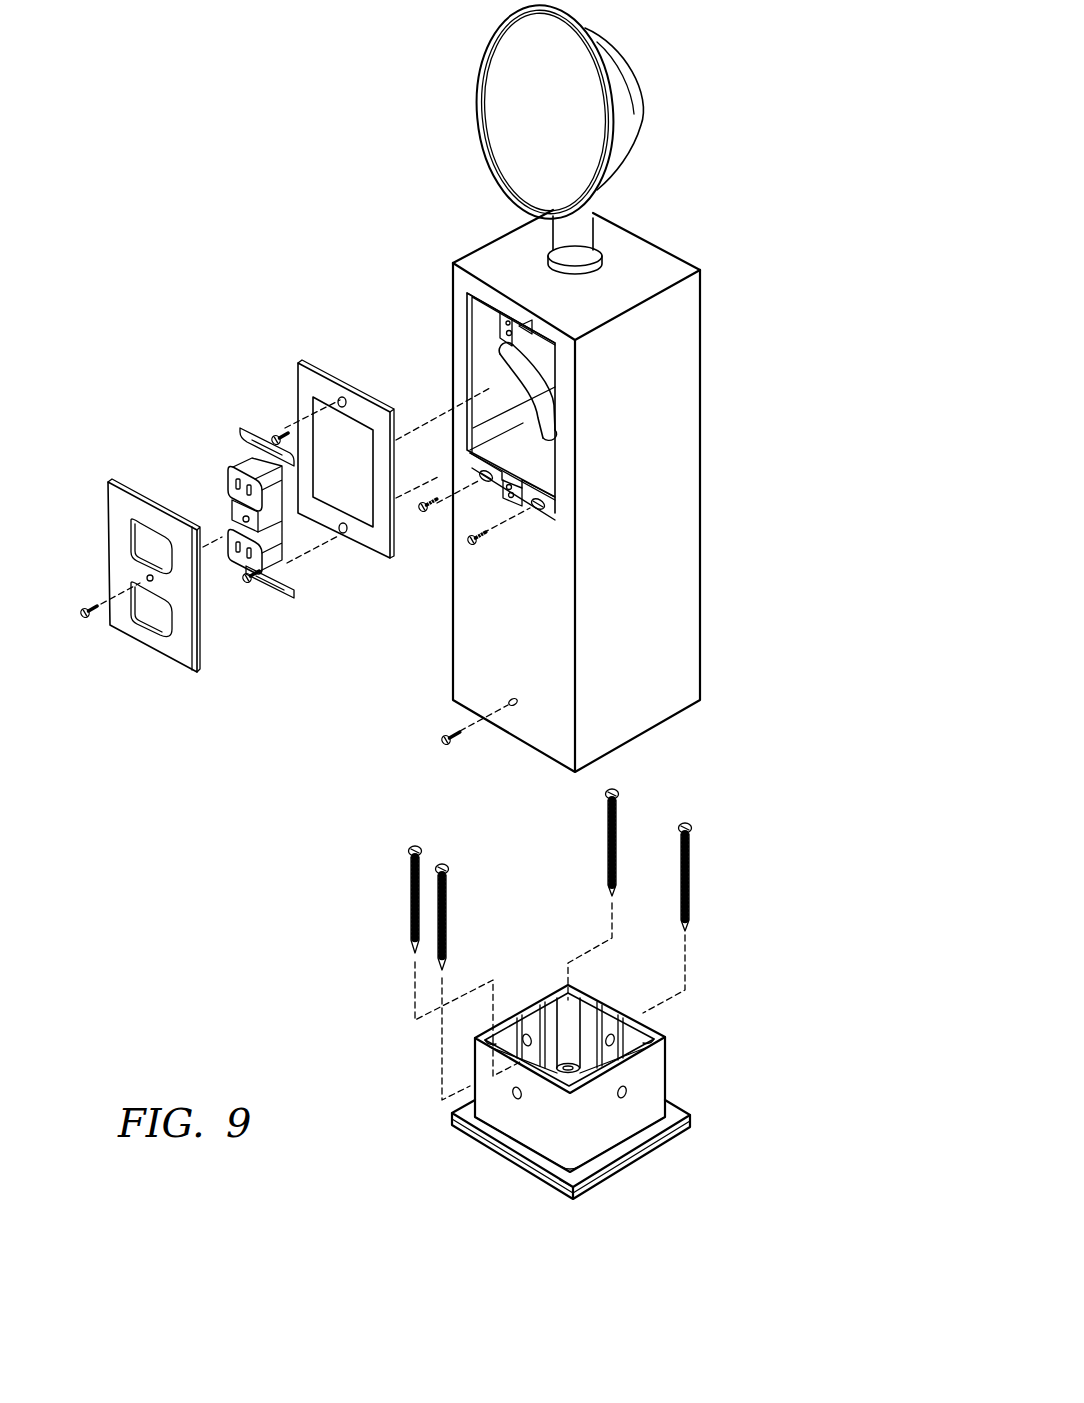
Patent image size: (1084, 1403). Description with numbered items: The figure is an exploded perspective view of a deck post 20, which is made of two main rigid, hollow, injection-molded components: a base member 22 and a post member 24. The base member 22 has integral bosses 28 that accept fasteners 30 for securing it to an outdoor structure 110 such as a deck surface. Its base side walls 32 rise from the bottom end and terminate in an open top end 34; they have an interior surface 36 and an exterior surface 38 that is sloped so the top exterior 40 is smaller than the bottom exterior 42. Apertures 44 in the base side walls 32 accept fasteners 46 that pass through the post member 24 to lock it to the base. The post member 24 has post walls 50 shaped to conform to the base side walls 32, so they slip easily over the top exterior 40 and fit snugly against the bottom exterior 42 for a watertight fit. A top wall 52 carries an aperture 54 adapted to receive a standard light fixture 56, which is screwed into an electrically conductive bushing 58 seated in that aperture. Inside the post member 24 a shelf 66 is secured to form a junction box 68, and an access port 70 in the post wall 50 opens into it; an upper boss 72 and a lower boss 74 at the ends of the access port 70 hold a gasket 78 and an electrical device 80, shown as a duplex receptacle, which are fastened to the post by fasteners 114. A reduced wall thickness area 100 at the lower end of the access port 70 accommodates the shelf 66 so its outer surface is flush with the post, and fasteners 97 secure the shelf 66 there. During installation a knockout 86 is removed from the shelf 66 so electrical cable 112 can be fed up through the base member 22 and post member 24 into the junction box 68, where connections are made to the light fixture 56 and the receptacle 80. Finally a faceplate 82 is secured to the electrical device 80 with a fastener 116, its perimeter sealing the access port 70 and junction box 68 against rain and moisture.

The deck post 20 is at (212, 208).
The base member 22 is at (722, 1026).
The post member 24 is at (744, 395).
The integral bosses 28 is at (565, 990).
The fasteners 30 is at (690, 870).
The base side walls 32 is at (650, 1110).
The open top end 34 is at (603, 1020).
The interior surface 36 is at (608, 1020).
The exterior surface 38 is at (538, 1140).
The top exterior 40 is at (595, 1100).
The bottom exterior 42 is at (588, 1150).
The apertures 44 is at (515, 1097).
The fasteners 46 is at (445, 735).
The post walls 50 is at (690, 555).
The top wall 52 is at (520, 265).
The aperture 54 is at (614, 253).
The light fixture 56 is at (632, 118).
The electrically conductive bushing 58 is at (600, 242).
The shelf 66 is at (528, 455).
The junction box 68 is at (488, 373).
The access port 70 is at (462, 360).
The upper boss 72 is at (505, 323).
The lower boss 74 is at (522, 498).
The gasket 78 is at (305, 385).
The electrical device 80 is at (230, 480).
The faceplate 82 is at (117, 507).
The knockout 86 is at (556, 412).
The fasteners 97 is at (430, 515).
The reduced wall thickness area 100 is at (552, 518).
The outdoor structure 110 is at (535, 652).
The electrical cable 112 is at (495, 350).
The fasteners 114 is at (283, 432).
The fastener 116 is at (88, 622).